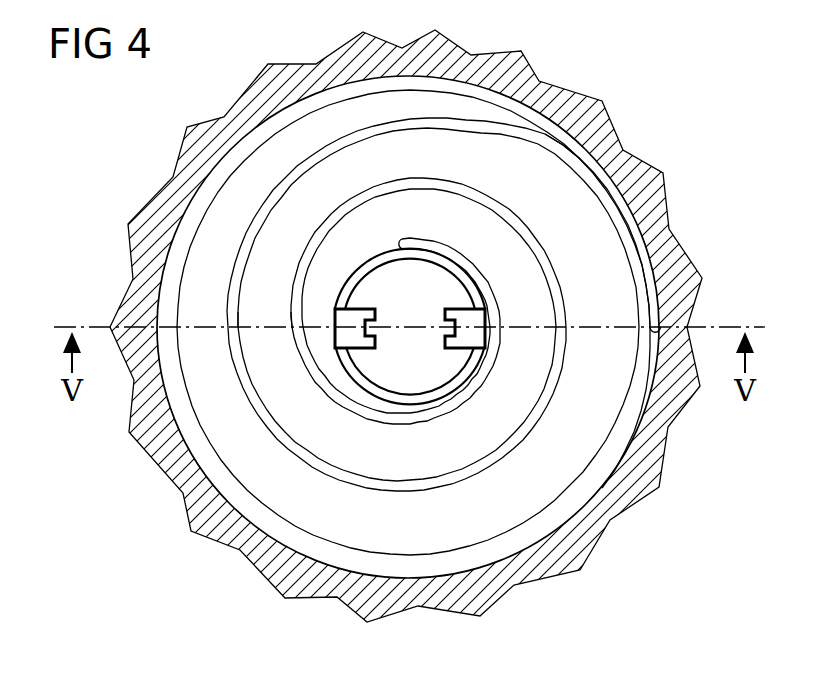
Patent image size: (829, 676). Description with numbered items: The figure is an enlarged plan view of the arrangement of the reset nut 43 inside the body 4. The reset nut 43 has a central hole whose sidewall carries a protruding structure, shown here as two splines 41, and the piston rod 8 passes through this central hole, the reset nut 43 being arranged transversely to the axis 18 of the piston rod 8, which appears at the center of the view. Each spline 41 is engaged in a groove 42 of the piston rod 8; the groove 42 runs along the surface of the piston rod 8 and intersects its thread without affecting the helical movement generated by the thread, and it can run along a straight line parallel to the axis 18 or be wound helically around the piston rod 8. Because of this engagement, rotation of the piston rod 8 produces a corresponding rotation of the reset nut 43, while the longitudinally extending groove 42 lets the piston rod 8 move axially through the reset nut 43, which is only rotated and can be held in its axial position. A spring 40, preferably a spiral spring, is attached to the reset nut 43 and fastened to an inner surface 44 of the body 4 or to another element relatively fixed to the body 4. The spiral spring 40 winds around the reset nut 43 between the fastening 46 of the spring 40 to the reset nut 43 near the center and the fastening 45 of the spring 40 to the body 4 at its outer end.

The body 4 is at (655, 216).
The piston rod 8 is at (456, 357).
The axis 18 is at (405, 368).
The spring 40 is at (230, 318).
The spline 41 is at (355, 307).
The groove 42 is at (446, 323).
The reset nut 43 is at (598, 433).
The inner surface 44 is at (604, 171).
The fastening 45 is at (658, 332).
The fastening 46 is at (406, 243).